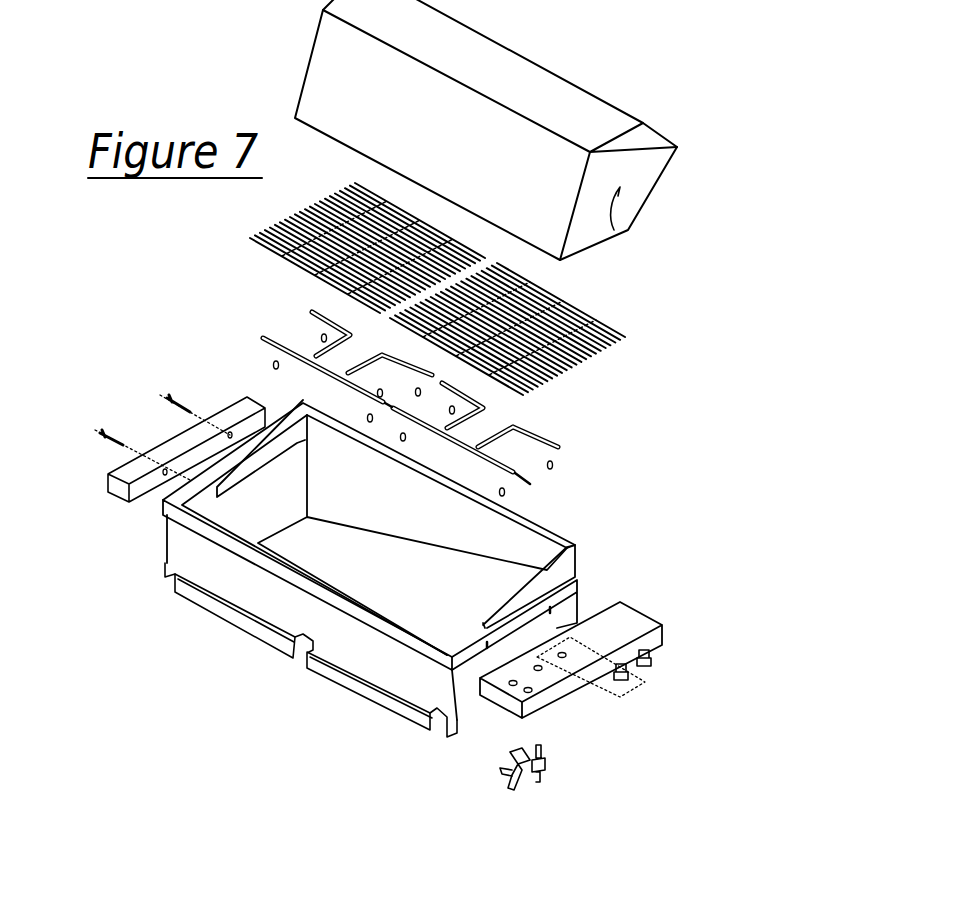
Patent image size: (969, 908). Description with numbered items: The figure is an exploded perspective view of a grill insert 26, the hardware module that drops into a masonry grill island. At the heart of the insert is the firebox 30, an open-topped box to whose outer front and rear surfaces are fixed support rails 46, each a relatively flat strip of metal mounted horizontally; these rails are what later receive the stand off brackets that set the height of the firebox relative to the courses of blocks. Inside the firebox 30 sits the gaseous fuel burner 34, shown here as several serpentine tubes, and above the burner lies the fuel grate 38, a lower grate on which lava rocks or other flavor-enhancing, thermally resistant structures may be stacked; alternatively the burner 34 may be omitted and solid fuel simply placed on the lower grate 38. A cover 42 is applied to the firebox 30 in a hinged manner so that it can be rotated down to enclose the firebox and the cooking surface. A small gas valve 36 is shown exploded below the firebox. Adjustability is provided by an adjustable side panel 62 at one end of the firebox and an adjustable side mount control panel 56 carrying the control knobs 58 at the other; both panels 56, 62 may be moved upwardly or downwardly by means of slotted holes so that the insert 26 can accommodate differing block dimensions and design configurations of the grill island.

The grill insert 26 is at (394, 593).
The firebox 30 is at (582, 561).
The gaseous fuel burner 34 is at (275, 335).
The gas valve 36 is at (545, 768).
The fuel grate 38 is at (308, 223).
The cover 42 is at (650, 172).
The support rails 46 is at (283, 679).
The adjustable side mount control panel 56 is at (633, 622).
The control knobs 58 is at (646, 686).
The adjustable side panel 62 is at (110, 495).